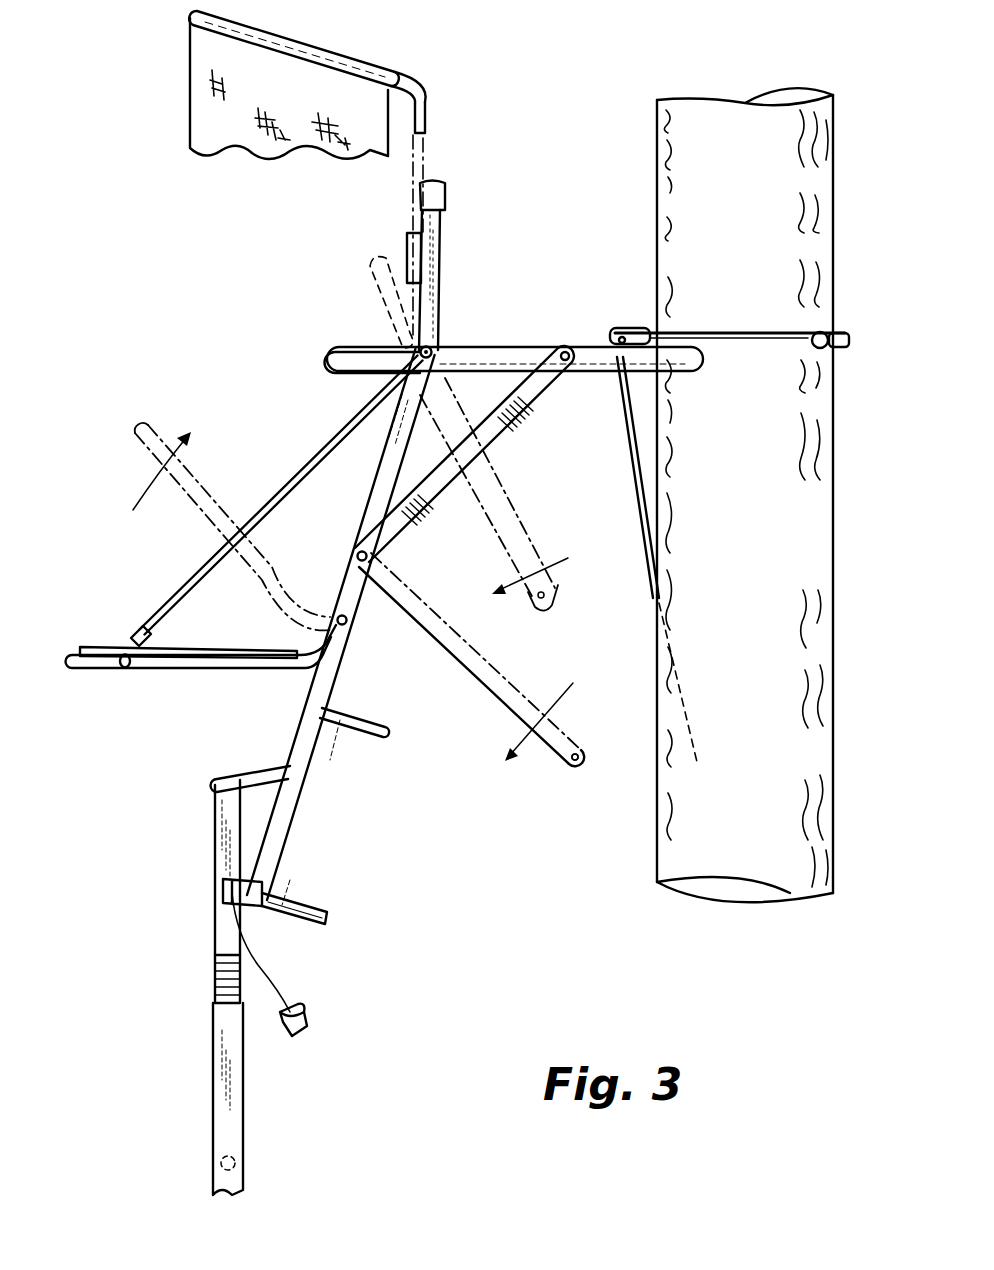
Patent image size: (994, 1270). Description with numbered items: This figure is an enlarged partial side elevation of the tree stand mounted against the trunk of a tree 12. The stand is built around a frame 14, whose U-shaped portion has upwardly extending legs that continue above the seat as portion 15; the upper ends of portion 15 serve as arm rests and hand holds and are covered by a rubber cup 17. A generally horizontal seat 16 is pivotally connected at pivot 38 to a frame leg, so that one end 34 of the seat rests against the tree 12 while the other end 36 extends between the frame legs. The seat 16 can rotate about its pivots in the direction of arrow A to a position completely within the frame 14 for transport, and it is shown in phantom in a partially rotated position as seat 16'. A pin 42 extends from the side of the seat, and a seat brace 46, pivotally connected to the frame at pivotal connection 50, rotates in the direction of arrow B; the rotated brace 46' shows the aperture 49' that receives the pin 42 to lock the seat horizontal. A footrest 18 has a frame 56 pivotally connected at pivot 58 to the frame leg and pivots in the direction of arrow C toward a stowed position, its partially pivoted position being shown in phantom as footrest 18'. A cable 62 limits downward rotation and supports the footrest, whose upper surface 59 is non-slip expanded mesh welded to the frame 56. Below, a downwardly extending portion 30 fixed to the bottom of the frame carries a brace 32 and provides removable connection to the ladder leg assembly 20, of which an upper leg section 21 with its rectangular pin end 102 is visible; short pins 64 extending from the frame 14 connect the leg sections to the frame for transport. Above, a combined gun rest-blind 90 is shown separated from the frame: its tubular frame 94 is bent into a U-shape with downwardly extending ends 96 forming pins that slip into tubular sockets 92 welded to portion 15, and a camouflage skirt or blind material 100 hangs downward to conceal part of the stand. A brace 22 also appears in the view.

The tree 12 is at (665, 855).
The frame 14 is at (386, 456).
The portion of frame 15 is at (440, 226).
The seat 16 is at (515, 315).
The seat in partially rotated position 16' is at (522, 494).
The rubber cup 17 is at (446, 186).
The footrest 18 is at (173, 668).
The footrest in partially pivoted position 18' is at (211, 503).
The ladder leg assembly 20 is at (212, 1127).
The upper leg section 21 is at (240, 1132).
The brace 22 is at (634, 470).
The downwardly extending portion 30 is at (218, 932).
The brace 32 is at (228, 780).
The end of seat 34 is at (613, 331).
The other end of seat 36 is at (343, 356).
The pivot 38 is at (414, 345).
The pin 42 is at (565, 350).
The seat brace 46 is at (476, 454).
The seat brace in rotated position 46' is at (494, 659).
The aperture 49' is at (533, 787).
The pivotal connection 50 is at (358, 552).
The footrest frame 56 is at (222, 668).
The pivot 58 is at (347, 635).
The upper surface 59 is at (120, 638).
The cable 62 is at (346, 438).
The short pin 64 is at (338, 895).
The gun rest-blind 90 is at (306, 46).
The tubular socket 92 is at (418, 258).
The tubular frame 94 is at (412, 80).
The downwardly extending end 96 is at (428, 112).
The camouflage skirt or blind material 100 is at (197, 70).
The pin end 102 is at (216, 993).
The arrow A is at (510, 587).
The arrow B is at (527, 732).
The arrow C is at (178, 442).